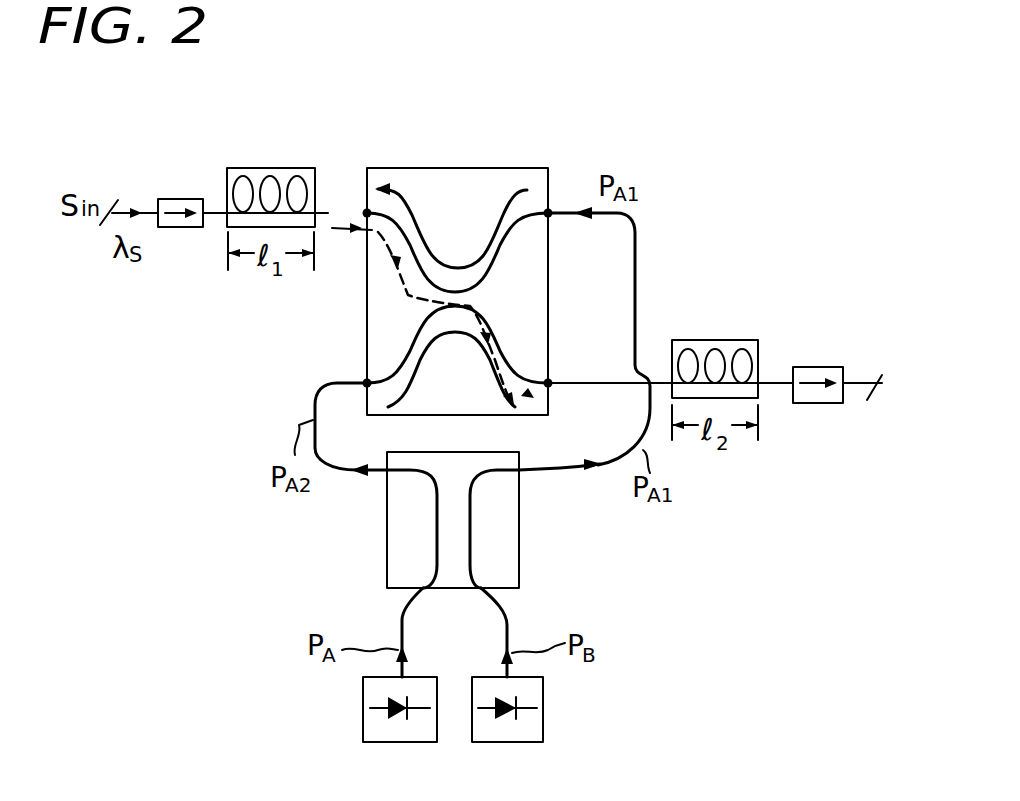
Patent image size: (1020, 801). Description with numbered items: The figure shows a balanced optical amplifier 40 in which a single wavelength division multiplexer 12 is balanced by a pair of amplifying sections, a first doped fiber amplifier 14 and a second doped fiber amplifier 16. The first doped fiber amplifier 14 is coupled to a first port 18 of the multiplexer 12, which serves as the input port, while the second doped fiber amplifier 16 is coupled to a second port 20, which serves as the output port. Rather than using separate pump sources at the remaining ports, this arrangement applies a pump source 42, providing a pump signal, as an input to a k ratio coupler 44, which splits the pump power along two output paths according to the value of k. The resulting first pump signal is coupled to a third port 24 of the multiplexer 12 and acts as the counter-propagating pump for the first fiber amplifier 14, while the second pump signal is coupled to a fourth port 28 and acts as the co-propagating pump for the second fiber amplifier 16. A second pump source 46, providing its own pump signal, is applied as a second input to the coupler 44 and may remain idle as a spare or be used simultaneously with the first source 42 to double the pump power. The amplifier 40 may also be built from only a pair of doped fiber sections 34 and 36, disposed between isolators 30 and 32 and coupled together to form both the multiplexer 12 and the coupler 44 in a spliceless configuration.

The balanced optical amplifier 40 is at (122, 134).
The isolator 30 is at (187, 199).
The first doped fiber amplifier 14 is at (268, 170).
The doped fiber section 34 is at (297, 177).
The first port 18 is at (367, 213).
The wavelength division multiplexer 12 is at (473, 168).
The third port 24 is at (548, 213).
The fourth port 28 is at (367, 383).
The second port 20 is at (548, 383).
The second doped fiber amplifier 16 is at (715, 340).
The isolator 32 is at (820, 367).
The doped fiber section 36 is at (780, 386).
The k ratio coupler 44 is at (525, 568).
The pump source 42 is at (363, 705).
The second pump source 46 is at (545, 705).